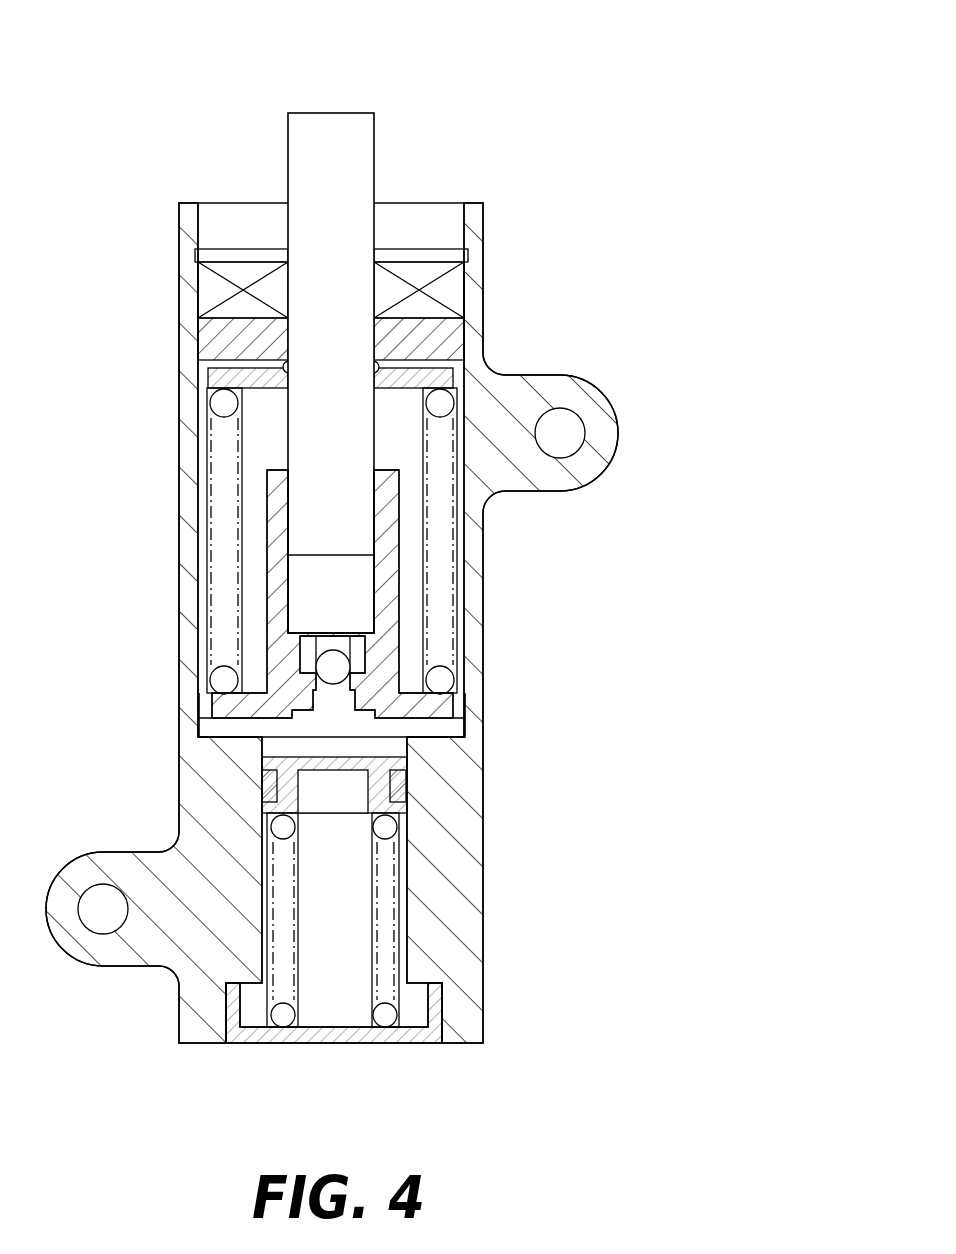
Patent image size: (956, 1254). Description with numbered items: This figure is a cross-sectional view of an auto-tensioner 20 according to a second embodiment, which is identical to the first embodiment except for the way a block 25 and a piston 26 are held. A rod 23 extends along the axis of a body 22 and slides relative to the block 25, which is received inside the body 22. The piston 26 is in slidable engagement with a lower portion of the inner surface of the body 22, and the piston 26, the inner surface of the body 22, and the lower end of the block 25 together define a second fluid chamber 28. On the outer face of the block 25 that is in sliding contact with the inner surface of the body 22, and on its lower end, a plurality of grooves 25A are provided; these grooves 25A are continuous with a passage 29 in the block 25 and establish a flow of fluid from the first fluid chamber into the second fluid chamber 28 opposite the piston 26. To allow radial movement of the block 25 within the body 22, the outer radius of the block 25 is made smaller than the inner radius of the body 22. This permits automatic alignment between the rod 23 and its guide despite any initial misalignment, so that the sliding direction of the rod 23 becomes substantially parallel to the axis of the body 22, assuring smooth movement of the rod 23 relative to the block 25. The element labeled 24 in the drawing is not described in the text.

The auto-tensioner 20 is at (440, 100).
The body 22 is at (478, 220).
The rod 23 is at (303, 143).
The bearing and seal assembly 24 is at (453, 290).
The block 25 is at (270, 583).
The grooves 25A is at (250, 726).
The piston 26 is at (325, 773).
The second fluid chamber 28 is at (325, 747).
The passage 29 is at (347, 688).